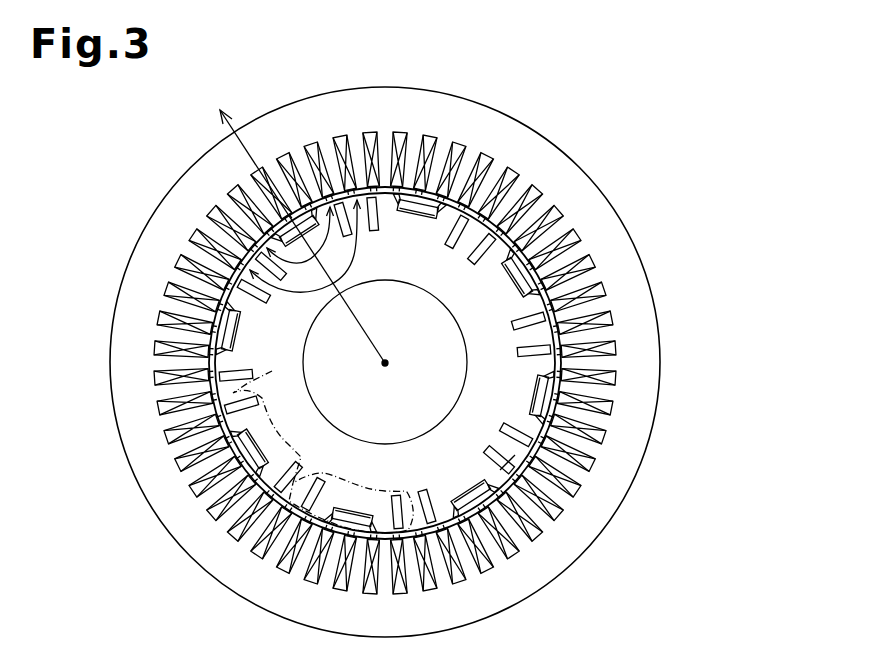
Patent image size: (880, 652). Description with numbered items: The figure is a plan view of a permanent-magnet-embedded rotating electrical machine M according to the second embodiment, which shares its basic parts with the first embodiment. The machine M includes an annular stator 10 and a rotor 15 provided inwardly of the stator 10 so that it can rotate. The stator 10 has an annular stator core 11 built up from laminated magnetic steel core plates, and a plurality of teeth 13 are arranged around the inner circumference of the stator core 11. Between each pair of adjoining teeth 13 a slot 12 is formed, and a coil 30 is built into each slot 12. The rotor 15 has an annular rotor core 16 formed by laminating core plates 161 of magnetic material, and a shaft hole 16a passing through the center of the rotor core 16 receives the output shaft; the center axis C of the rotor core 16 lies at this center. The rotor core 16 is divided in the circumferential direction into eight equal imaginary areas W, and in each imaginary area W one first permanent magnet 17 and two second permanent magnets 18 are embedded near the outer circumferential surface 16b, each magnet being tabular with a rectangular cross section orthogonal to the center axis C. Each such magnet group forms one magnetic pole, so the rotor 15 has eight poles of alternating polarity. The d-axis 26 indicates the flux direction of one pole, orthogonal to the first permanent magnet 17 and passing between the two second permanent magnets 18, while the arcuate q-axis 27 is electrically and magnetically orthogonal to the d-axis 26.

The permanent-magnet-embedded rotating electrical machine M is at (662, 253).
The stator 10 is at (667, 331).
The stator core 11 is at (640, 447).
The slot 12 is at (368, 130).
The teeth 13 is at (320, 146).
The coil 30 is at (353, 138).
The rotor 15 is at (566, 386).
The rotor core 16 is at (501, 487).
The shaft hole 16a is at (456, 404).
The outer circumferential surface 16b is at (546, 305).
The core plates 161 is at (504, 478).
The first permanent magnet 17 is at (418, 213).
The second permanent magnets 18 is at (376, 232).
The d-axis 26 is at (241, 142).
The q-axis 27 is at (308, 266).
The center axis C is at (388, 363).
The imaginary area W is at (272, 371).